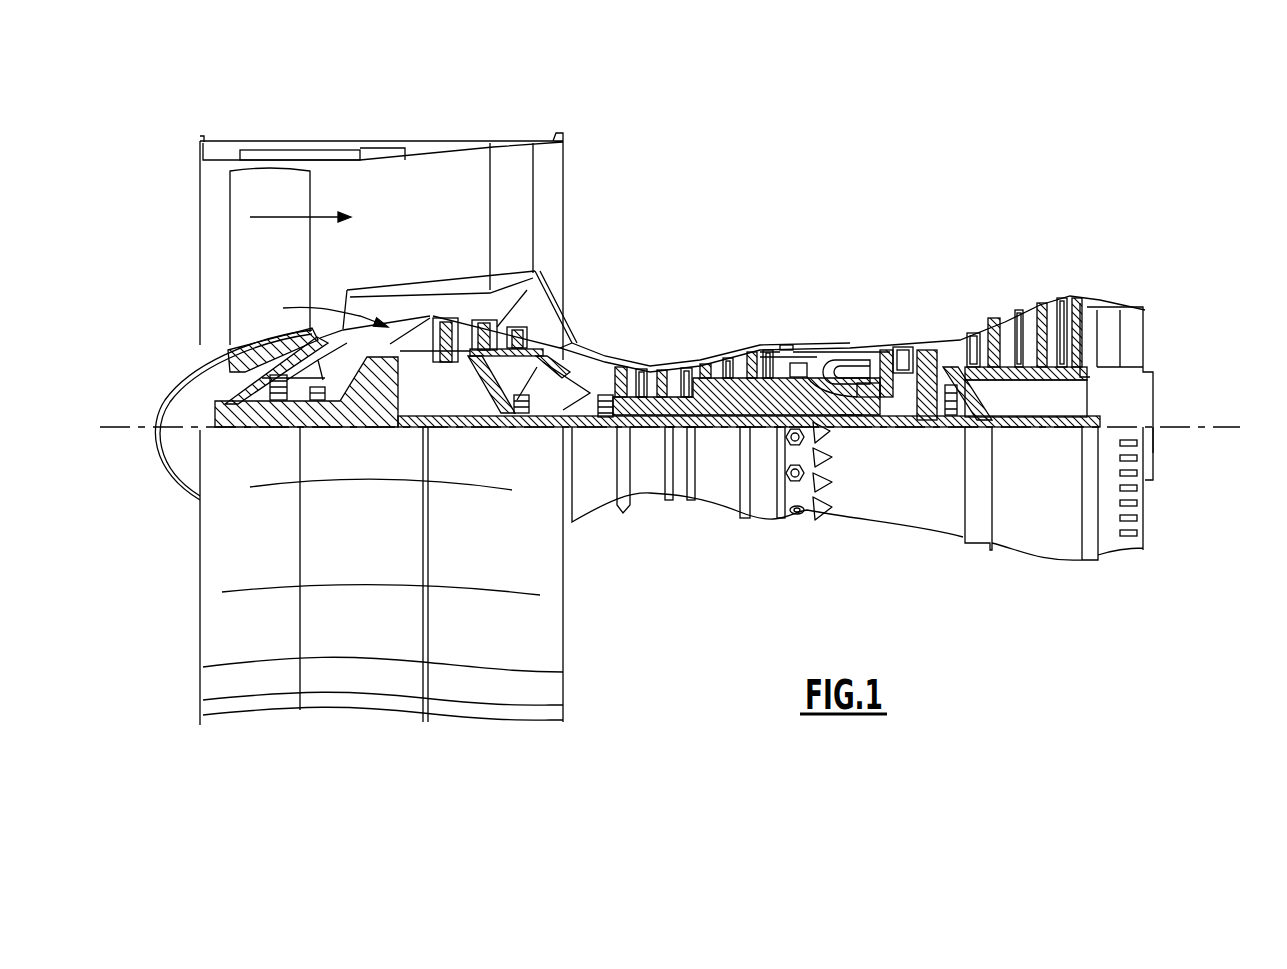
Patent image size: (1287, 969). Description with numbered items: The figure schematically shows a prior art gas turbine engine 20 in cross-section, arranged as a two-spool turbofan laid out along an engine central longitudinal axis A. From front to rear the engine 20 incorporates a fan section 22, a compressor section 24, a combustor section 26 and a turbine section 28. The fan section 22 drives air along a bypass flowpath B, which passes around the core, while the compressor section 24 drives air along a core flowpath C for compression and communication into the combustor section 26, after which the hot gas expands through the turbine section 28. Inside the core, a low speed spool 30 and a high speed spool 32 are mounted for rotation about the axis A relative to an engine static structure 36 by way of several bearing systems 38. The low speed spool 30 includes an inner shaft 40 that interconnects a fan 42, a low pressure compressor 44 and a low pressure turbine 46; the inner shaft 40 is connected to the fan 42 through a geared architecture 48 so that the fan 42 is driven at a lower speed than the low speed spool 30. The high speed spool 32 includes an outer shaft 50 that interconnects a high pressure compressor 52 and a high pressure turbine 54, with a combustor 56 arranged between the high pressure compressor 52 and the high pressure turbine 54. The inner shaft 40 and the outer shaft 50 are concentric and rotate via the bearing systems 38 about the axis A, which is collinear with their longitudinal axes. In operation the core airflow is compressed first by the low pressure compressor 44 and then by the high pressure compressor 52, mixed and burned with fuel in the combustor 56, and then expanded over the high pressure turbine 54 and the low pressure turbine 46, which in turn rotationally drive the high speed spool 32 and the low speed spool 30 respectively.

The gas turbine engine 20 is at (842, 195).
The fan section 22 is at (307, 126).
The compressor section 24 is at (613, 328).
The combustor section 26 is at (837, 318).
The turbine section 28 is at (987, 280).
The low speed spool 30 is at (721, 442).
The high speed spool 32 is at (760, 352).
The engine static structure 36 is at (762, 525).
The bearing systems 38 is at (526, 430).
The inner shaft 40 is at (580, 430).
The fan 42 is at (284, 272).
The low pressure compressor 44 is at (497, 327).
The low pressure turbine 46 is at (1028, 322).
The geared architecture 48 is at (388, 410).
The outer shaft 50 is at (848, 418).
The high pressure compressor 52 is at (698, 395).
The high pressure turbine 54 is at (898, 345).
The combustor 56 is at (840, 365).
The engine central longitudinal axis A is at (1232, 425).
The bypass flowpath B is at (286, 215).
The core flowpath C is at (325, 310).